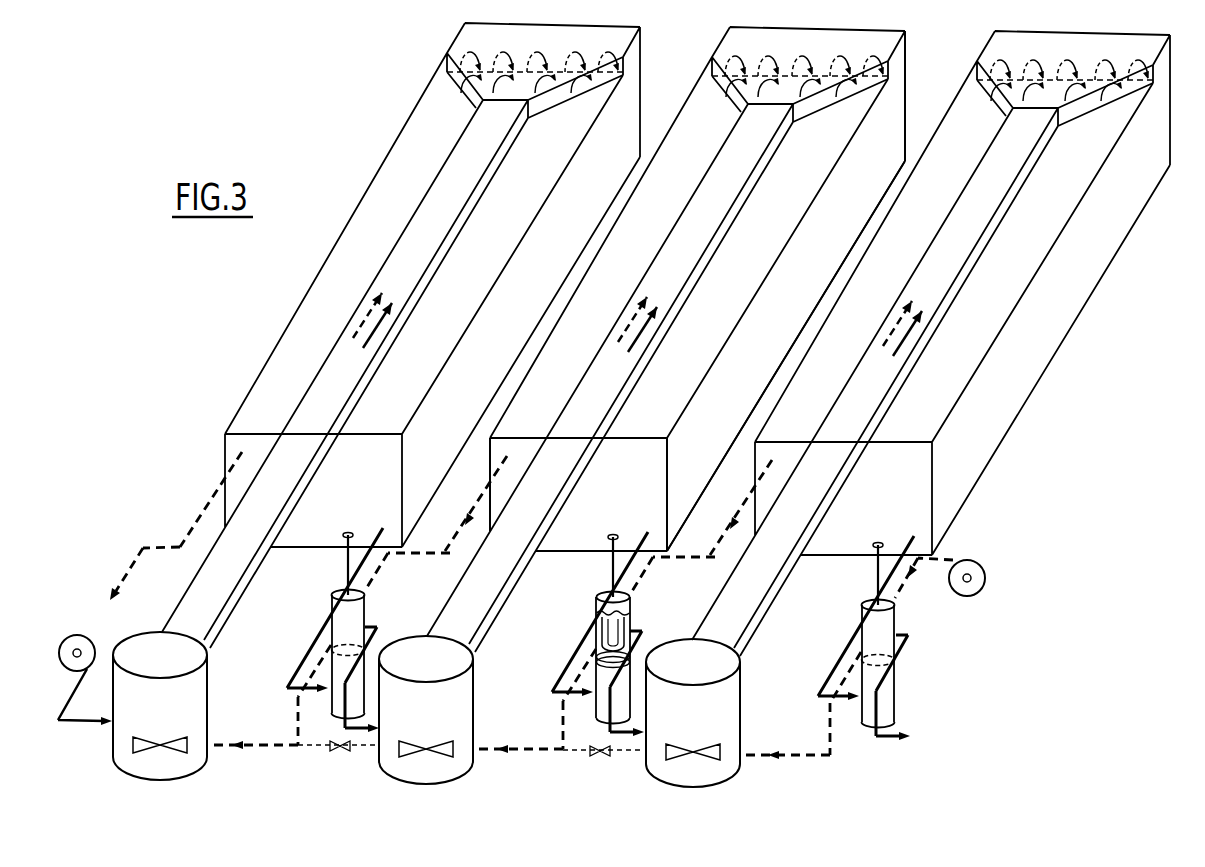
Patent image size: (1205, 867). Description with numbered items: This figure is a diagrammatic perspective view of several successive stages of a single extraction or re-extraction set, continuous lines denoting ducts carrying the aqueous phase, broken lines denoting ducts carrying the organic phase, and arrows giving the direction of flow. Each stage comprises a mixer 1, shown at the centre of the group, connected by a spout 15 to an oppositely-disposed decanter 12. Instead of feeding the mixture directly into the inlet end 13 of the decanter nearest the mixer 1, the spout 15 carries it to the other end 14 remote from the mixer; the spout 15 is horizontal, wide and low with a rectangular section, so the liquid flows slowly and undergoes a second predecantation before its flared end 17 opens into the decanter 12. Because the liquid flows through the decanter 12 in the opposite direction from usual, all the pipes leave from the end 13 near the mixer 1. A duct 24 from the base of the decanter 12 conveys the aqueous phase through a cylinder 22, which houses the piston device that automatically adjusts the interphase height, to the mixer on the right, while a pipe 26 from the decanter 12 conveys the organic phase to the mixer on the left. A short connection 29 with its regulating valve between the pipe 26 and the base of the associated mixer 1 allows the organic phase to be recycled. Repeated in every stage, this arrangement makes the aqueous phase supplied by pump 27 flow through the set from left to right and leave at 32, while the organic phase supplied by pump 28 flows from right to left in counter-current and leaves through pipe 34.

The mixer 1 is at (480, 767).
The decanter 12 is at (685, 95).
The inlet end of the decanter 13 is at (658, 497).
The other end of the decanter 14 is at (907, 65).
The spout 15 is at (612, 385).
The flared end of the spout 17 is at (1085, 129).
The cylinder 22 is at (632, 615).
The duct 24 is at (627, 568).
The pipe 26 is at (420, 555).
The pump 27 is at (75, 640).
The pump 28 is at (985, 578).
The short connection 29 is at (323, 757).
The aqueous phase outlet 32 is at (893, 737).
The pipe 34 is at (139, 548).